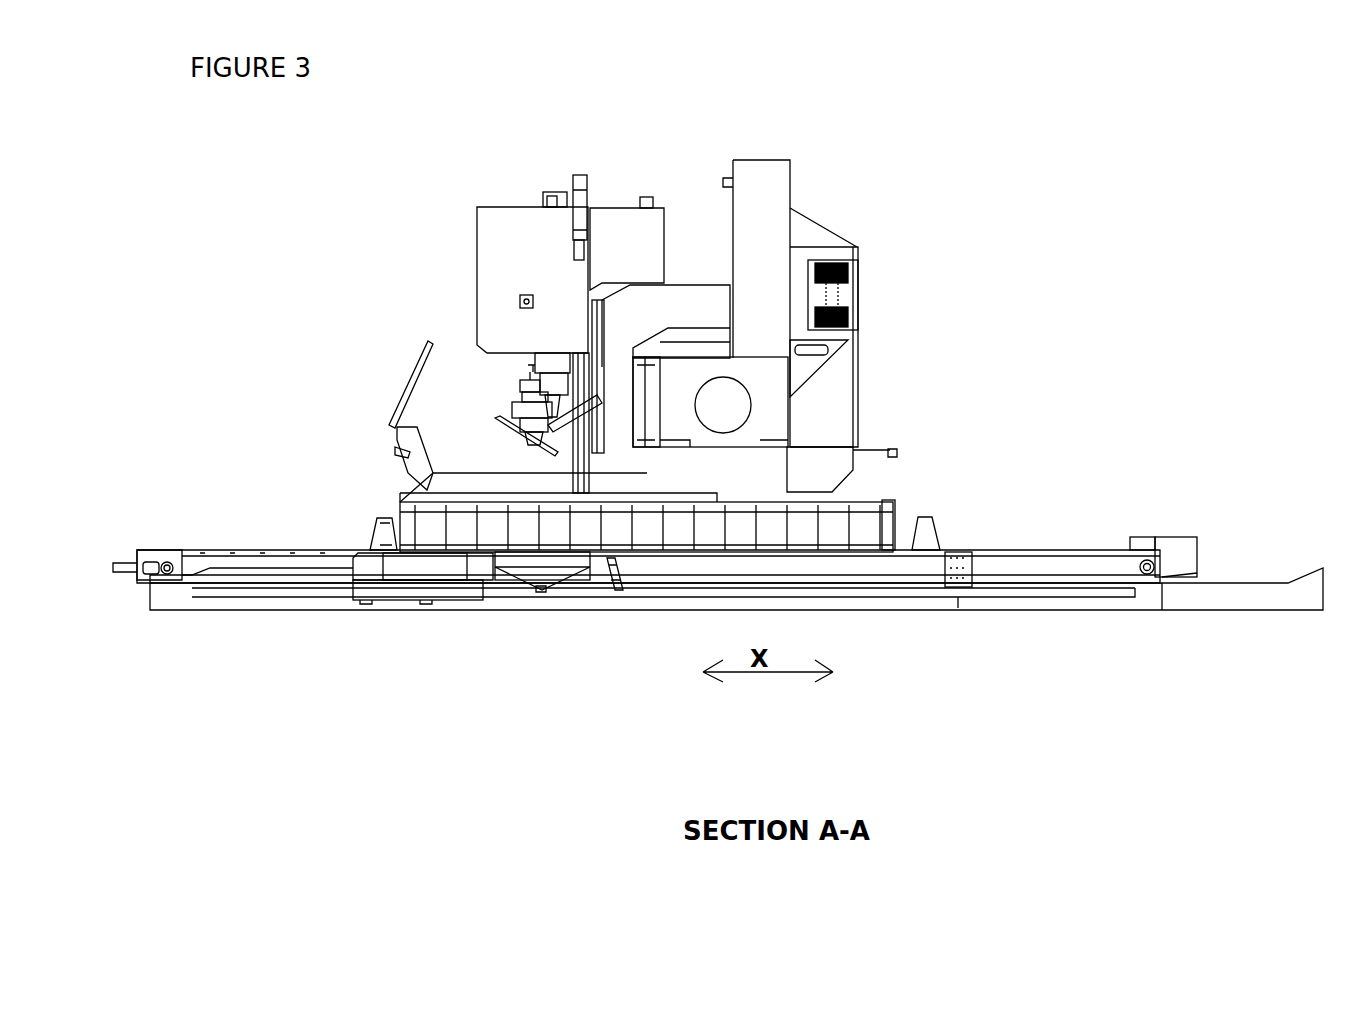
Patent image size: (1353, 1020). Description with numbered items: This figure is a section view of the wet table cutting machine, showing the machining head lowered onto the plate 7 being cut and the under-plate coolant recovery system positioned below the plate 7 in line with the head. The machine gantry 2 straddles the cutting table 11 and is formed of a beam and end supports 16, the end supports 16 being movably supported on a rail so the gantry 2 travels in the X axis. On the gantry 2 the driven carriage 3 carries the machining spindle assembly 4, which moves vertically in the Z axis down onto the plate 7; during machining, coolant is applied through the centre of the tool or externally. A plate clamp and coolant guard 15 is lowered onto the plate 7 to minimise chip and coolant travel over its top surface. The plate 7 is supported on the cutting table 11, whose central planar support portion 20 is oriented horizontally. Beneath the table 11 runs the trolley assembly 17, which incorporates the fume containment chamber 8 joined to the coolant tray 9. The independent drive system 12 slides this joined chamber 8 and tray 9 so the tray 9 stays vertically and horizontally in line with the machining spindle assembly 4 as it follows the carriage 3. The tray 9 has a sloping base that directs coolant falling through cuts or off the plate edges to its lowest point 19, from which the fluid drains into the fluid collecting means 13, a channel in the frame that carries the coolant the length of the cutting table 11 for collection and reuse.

The machine gantry 2 is at (790, 403).
The driven carriage 3 is at (665, 305).
The machining spindle assembly 4 is at (543, 360).
The plate 7 is at (490, 493).
The fume containment chamber 8 is at (413, 588).
The coolant tray 9 is at (553, 572).
The cutting table 11 is at (413, 530).
The independent drive system 12 is at (1172, 548).
The fluid collecting means 13 is at (930, 600).
The plate clamp and coolant guard 15 is at (542, 493).
The end supports 16 is at (765, 472).
The trolley assembly 17 is at (370, 567).
The lowest point 19 is at (540, 590).
The central planar support portion 20 is at (993, 572).